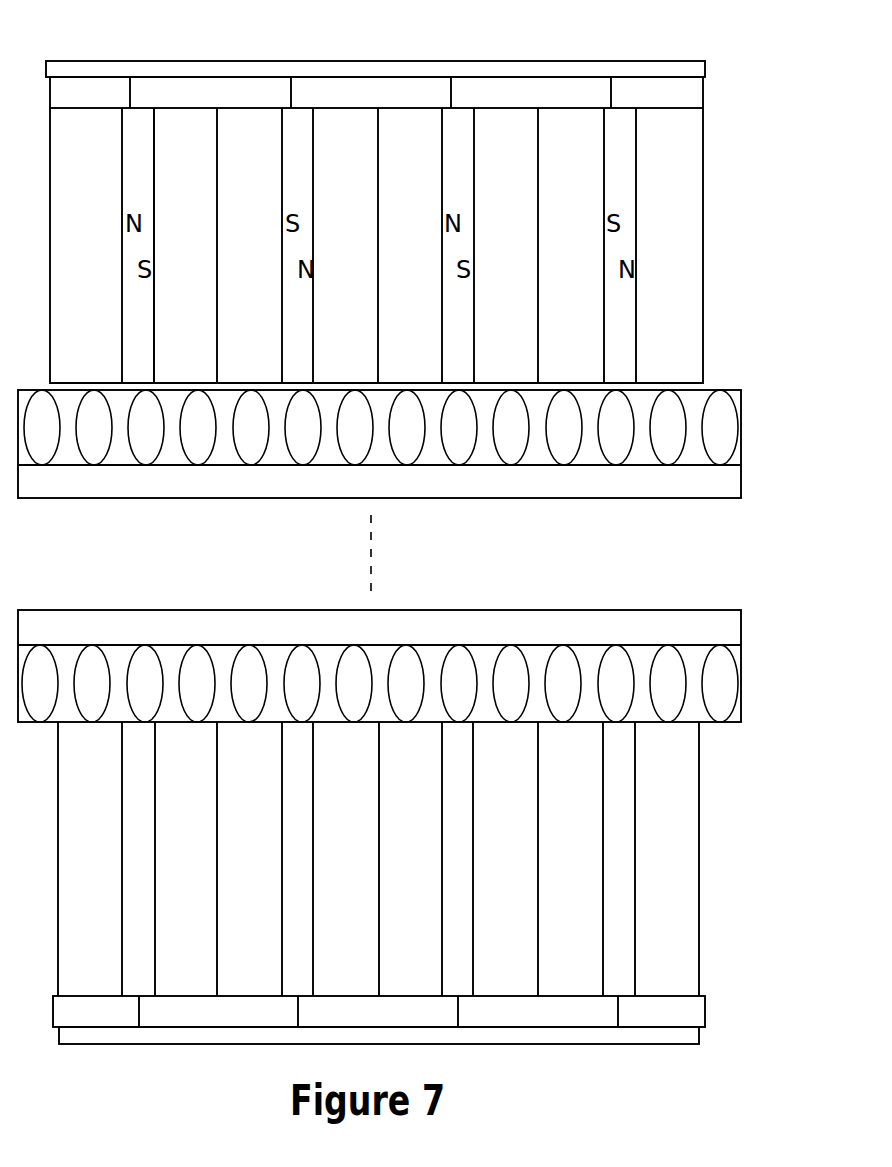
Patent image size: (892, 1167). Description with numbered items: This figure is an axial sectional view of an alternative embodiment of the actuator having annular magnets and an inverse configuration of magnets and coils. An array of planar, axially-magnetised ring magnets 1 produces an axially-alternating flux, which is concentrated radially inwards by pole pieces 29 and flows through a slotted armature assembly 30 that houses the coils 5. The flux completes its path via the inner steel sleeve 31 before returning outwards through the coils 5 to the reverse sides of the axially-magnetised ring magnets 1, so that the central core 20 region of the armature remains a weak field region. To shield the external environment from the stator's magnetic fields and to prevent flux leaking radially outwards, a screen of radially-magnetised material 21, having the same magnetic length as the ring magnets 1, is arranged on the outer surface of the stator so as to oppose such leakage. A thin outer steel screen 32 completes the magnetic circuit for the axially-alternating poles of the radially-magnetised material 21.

The ring magnets 1 is at (127, 125).
The coils 5 is at (205, 452).
The core 20 is at (704, 570).
The radially-magnetised material 21 is at (171, 92).
The pole pieces 29 is at (90, 982).
The slotted armature assembly 30 is at (487, 450).
The inner steel sleeve 31 is at (583, 475).
The outer steel screen 32 is at (302, 73).